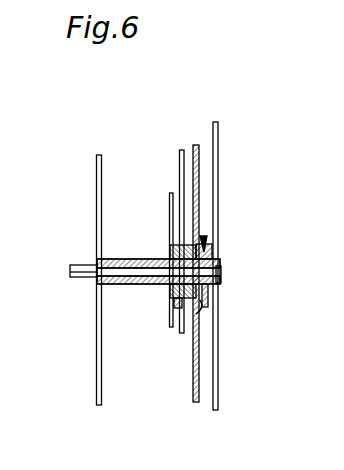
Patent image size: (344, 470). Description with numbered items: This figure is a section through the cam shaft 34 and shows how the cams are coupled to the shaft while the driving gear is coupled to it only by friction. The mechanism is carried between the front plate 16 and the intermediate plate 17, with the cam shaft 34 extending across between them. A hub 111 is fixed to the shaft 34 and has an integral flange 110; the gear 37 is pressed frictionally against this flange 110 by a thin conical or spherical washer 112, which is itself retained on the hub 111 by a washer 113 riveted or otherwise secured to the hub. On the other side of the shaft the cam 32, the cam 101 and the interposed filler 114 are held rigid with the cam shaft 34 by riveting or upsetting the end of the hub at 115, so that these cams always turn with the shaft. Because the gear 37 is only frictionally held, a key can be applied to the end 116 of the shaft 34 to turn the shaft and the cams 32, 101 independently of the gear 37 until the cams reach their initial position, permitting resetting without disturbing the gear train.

The front plate 16 is at (102, 200).
The intermediate plate 17 is at (218, 191).
The cam 32 is at (181, 334).
The cam shaft 34 is at (221, 275).
The gear 37 is at (200, 358).
The cam 101 is at (174, 296).
The flange 110 is at (201, 312).
The hub 111 is at (209, 299).
The conical or spherical washer 112 is at (208, 246).
The washer 113 is at (211, 256).
The filler 114 is at (176, 306).
The riveted end of hub 115 is at (172, 256).
The end of shaft 116 is at (78, 278).